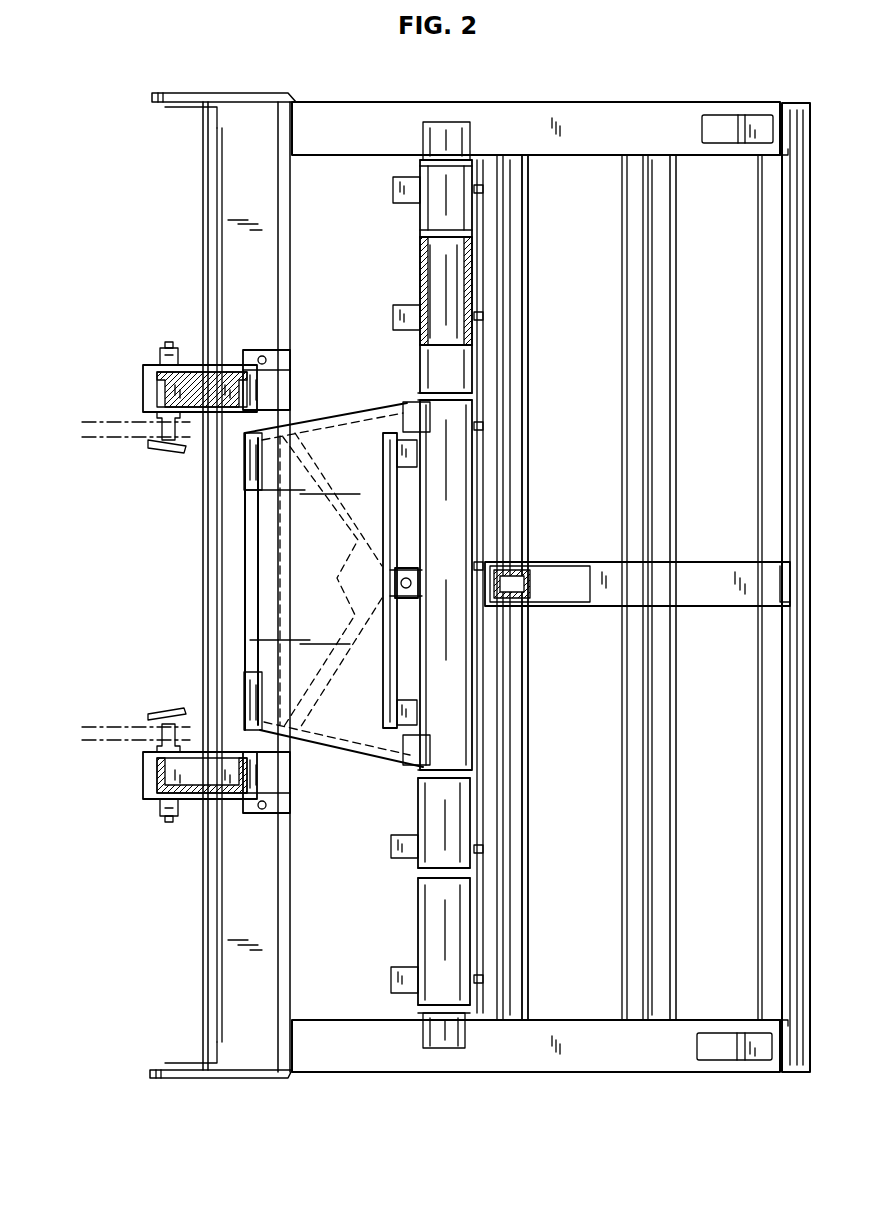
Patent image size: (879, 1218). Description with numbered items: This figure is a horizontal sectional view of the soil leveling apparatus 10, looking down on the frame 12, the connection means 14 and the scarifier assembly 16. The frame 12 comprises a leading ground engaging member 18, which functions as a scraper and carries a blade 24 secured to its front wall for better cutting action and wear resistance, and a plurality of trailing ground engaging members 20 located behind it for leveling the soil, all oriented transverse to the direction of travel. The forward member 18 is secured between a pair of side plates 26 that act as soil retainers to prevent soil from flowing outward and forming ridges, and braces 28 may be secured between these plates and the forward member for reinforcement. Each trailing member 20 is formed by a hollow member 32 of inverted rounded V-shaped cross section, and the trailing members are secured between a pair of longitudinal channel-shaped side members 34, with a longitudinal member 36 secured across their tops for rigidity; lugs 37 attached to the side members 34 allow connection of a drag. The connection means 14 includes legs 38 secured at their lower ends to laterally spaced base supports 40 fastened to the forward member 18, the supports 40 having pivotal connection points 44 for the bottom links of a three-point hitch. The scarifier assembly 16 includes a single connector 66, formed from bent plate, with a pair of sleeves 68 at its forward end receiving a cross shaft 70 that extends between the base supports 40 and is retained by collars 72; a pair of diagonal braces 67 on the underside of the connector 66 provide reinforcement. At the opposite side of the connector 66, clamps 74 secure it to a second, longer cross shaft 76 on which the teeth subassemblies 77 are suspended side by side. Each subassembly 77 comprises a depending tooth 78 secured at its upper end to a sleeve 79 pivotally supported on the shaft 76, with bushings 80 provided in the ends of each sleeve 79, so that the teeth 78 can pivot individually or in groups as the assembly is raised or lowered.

The soil leveling apparatus 10 is at (672, 86).
The frame 12 is at (444, 584).
The connection means 14 is at (195, 592).
The scarifier assembly 16 is at (453, 588).
The leading ground engaging member 18 is at (225, 272).
The trailing ground engaging members 20 is at (680, 383).
The blade 24 is at (203, 957).
The side plates 26 is at (168, 93).
The braces 28 is at (170, 108).
The hollow member 32 is at (658, 360).
The side members 34 is at (560, 118).
The longitudinal member 36 is at (707, 576).
The lugs 37 is at (720, 128).
The legs 38 is at (195, 370).
The base supports 40 is at (150, 365).
The pivotal connection points 44 is at (166, 452).
The connector 66 is at (308, 601).
The diagonal braces 67 is at (352, 580).
The sleeves 68 is at (244, 482).
The cross shaft 70 is at (245, 604).
The collars 72 is at (283, 362).
The clamps 74 is at (450, 440).
The second cross shaft 76 is at (447, 128).
The teeth subassemblies 77 is at (432, 222).
The tooth 78 is at (395, 190).
The sleeve 79 is at (446, 226).
The bushings 80 is at (430, 163).